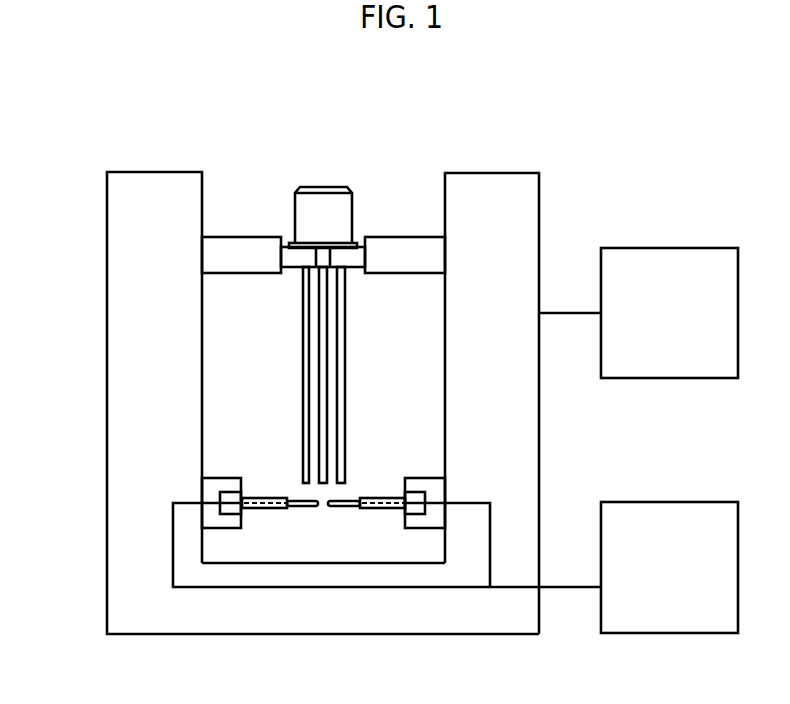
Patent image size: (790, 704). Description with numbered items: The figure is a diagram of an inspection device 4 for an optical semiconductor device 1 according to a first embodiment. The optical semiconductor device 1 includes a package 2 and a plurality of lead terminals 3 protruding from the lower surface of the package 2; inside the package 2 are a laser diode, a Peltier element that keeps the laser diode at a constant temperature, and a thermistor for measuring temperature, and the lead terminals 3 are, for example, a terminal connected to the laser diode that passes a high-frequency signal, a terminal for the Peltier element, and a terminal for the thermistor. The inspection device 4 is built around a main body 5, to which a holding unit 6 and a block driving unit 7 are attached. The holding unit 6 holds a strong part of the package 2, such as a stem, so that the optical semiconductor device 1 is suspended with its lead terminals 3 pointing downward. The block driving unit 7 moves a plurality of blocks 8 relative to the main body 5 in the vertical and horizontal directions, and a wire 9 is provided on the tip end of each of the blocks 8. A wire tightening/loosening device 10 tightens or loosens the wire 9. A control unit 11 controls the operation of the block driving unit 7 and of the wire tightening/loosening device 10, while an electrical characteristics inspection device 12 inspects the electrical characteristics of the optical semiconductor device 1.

The optical semiconductor device 1 is at (286, 171).
The package 2 is at (326, 207).
The lead terminals 3 is at (345, 387).
The inspection device 4 is at (99, 148).
The main body 5 is at (527, 190).
The holding unit 6 is at (405, 248).
The block driving unit 7 is at (437, 488).
The blocks 8 is at (383, 507).
The wire 9 is at (302, 507).
The wire tightening/loosening device 10 is at (233, 493).
The control unit 11 is at (670, 267).
The electrical characteristics inspection device 12 is at (670, 517).